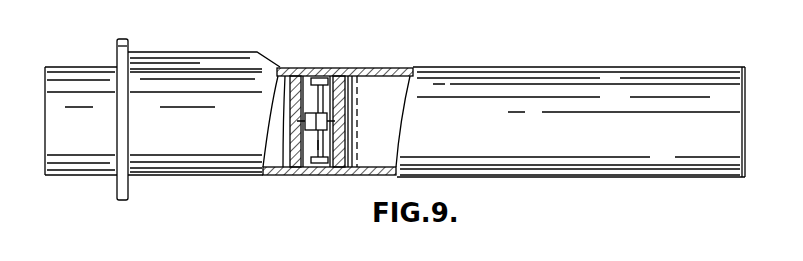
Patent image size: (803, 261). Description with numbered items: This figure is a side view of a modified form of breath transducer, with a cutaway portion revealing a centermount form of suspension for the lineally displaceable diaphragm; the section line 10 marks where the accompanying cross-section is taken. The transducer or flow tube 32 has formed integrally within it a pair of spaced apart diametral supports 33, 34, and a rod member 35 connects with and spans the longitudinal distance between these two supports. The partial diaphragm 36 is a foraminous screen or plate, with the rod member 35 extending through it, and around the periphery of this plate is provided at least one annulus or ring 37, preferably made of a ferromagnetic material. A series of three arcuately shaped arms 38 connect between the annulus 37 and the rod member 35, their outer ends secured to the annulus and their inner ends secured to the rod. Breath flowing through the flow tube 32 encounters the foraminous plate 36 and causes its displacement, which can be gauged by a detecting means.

The section line 10- 10 is at (318, 219).
The flow tube 32 is at (592, 70).
The diametral support 33 is at (283, 152).
The diametral support 34 is at (358, 73).
The rod member 35 is at (305, 120).
The partial diaphragm 36 is at (323, 152).
The annulus 37 is at (318, 75).
The arcuately shaped arms 38 is at (300, 86).